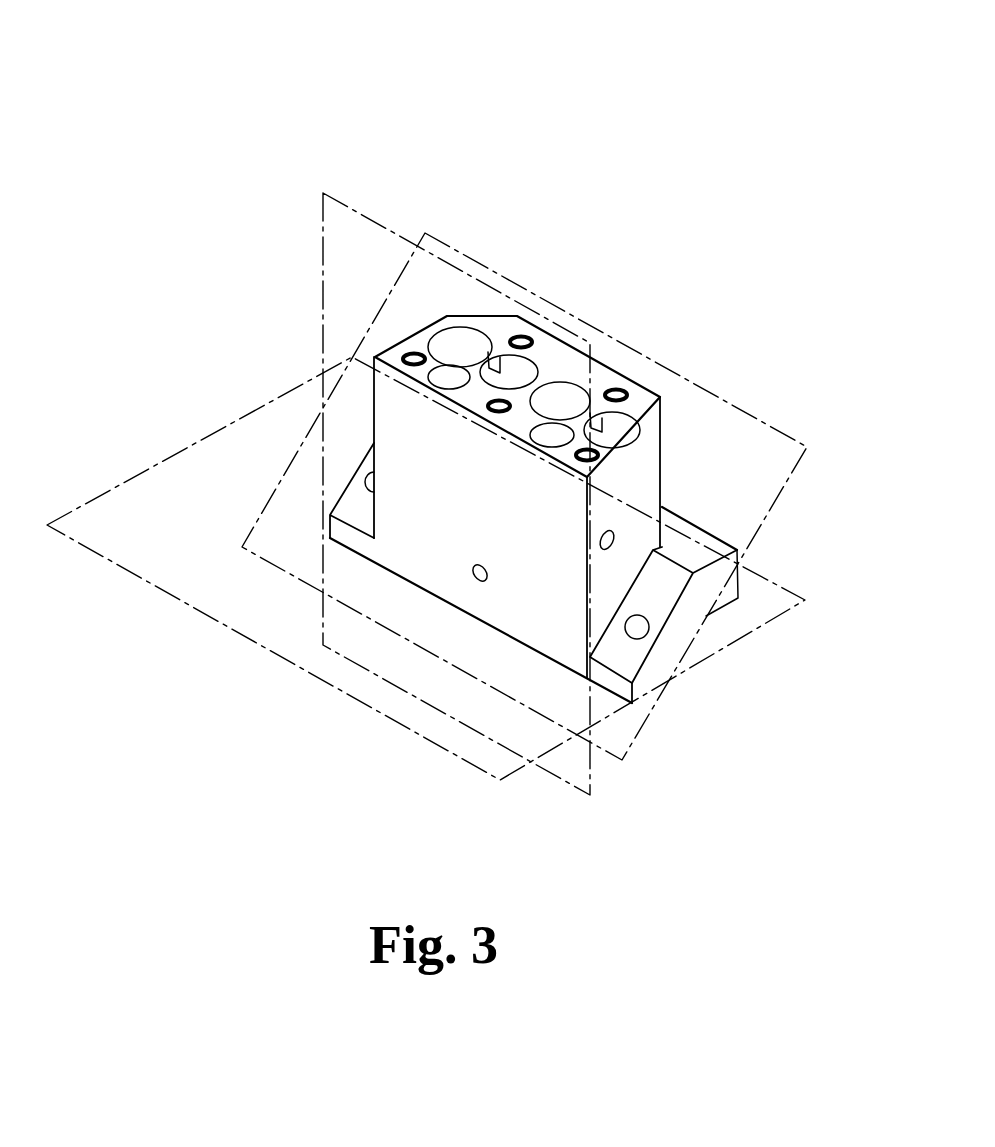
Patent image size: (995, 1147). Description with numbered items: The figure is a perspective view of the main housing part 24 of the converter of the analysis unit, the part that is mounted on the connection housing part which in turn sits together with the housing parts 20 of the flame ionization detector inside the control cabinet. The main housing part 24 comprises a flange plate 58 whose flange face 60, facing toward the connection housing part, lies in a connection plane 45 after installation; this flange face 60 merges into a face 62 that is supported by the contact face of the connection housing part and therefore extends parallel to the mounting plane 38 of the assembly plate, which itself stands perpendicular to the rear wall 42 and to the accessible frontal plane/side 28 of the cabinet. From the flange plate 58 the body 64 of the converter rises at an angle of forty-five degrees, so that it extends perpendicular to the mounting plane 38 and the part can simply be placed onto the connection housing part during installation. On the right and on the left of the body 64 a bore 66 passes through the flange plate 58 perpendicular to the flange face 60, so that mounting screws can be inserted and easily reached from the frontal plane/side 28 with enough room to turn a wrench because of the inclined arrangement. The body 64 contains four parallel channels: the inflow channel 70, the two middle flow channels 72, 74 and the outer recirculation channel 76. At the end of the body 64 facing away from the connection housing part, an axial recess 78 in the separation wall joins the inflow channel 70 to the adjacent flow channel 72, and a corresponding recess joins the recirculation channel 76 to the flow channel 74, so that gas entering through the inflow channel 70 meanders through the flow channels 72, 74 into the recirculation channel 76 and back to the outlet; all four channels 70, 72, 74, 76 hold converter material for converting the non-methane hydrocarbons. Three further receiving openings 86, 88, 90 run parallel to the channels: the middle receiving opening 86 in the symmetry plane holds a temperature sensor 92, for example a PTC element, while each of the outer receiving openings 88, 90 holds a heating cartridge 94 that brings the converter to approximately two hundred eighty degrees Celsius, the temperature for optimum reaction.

The housing parts 20 is at (702, 389).
The main housing part 24 is at (522, 80).
The accessible frontal plane/side 28 is at (430, 555).
The mounting plane 38 is at (664, 721).
The rear wall 42 is at (710, 505).
The connection plane 45 is at (768, 504).
The flange plate 58 is at (652, 587).
The flange face 60 is at (715, 652).
The face 62 is at (727, 607).
The body 64 is at (632, 480).
The bore 66 is at (638, 628).
The inflow channel 70 is at (460, 343).
The flow channel 72 is at (517, 372).
The flow channel 74 is at (562, 398).
The recirculation channel 76 is at (620, 428).
The axial recess 78 is at (495, 372).
The receiving opening 86 is at (587, 303).
The receiving opening 88 is at (548, 437).
The receiving opening 90 is at (430, 380).
The temperature sensor 92 is at (509, 405).
The heating cartridge 94 is at (331, 396).